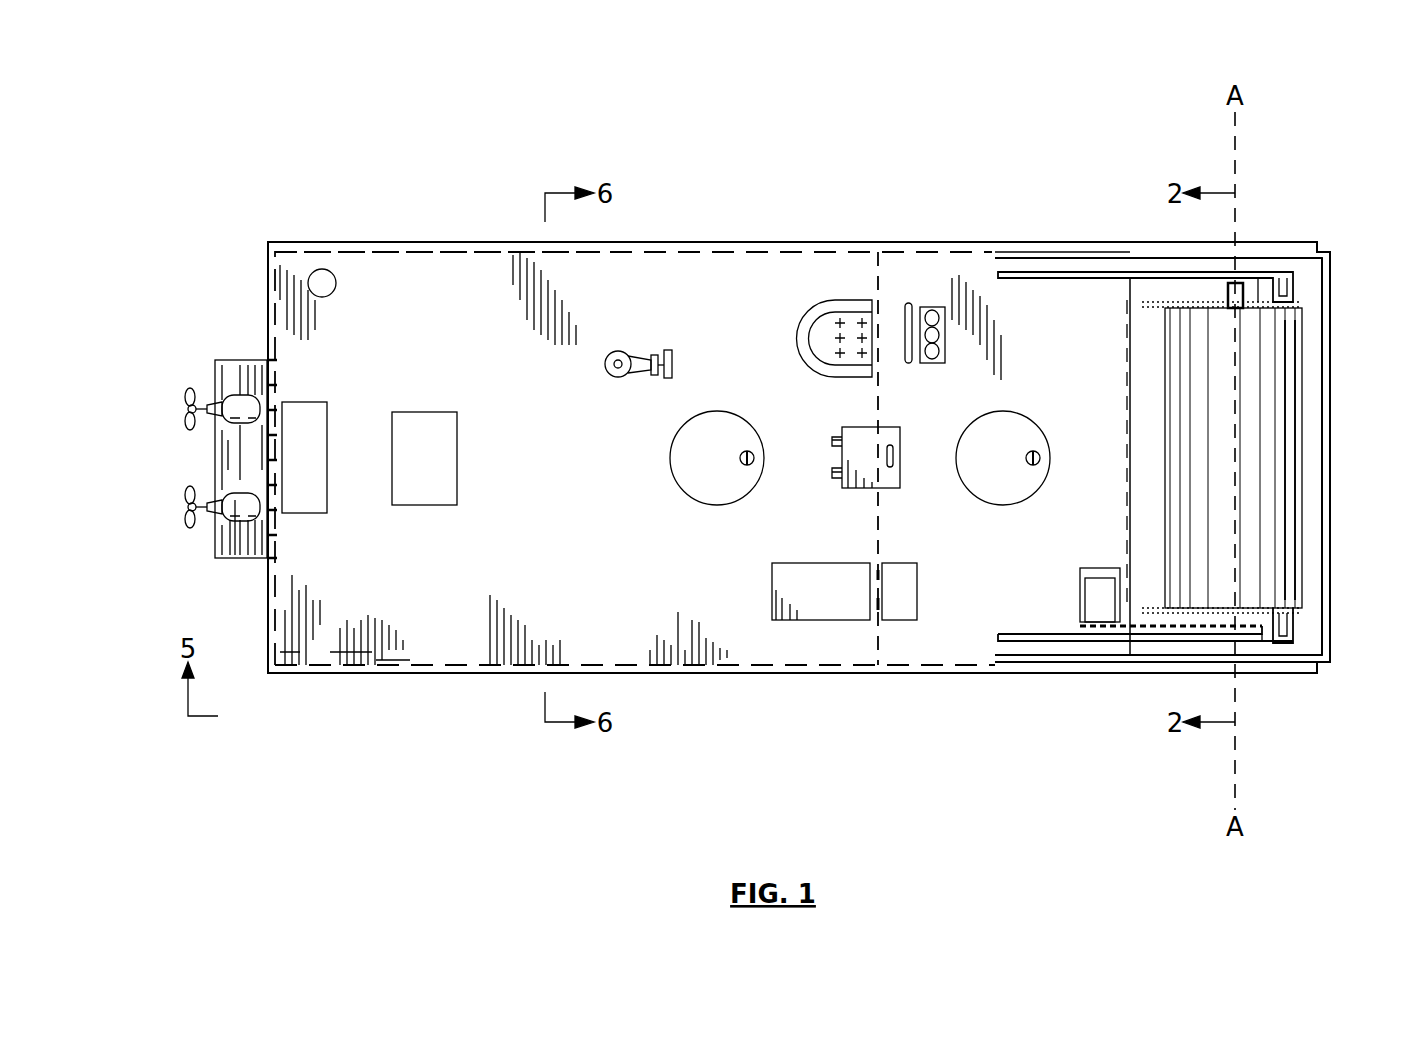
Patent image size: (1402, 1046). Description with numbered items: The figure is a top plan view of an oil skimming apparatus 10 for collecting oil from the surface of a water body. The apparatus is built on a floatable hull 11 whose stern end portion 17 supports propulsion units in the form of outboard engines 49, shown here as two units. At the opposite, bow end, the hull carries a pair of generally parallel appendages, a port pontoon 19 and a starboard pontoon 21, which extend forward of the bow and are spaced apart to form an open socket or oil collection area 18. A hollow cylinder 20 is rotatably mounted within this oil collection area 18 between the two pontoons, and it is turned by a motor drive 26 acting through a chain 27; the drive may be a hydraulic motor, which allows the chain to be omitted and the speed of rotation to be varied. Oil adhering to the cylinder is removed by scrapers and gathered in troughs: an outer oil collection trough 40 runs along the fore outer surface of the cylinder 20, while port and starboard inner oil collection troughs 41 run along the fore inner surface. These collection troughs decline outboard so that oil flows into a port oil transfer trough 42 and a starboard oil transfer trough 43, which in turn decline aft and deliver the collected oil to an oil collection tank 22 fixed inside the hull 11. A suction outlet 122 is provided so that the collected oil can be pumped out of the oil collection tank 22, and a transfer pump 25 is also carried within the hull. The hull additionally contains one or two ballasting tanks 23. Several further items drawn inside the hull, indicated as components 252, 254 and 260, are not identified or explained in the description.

The oil skimming apparatus 10 is at (448, 105).
The floatable hull 11 is at (448, 247).
The stern end portion 17 is at (322, 242).
The suction outlet 122 is at (325, 282).
The port oil transfer trough 42 is at (1062, 216).
The port pontoon 19 is at (1264, 275).
The inner oil collection trough 41 is at (1265, 285).
The oil collection area 18 is at (1265, 360).
The outer oil collection trough 40 is at (1312, 413).
The hollow cylinder 20 is at (1268, 555).
The chain 27 is at (1135, 628).
The motor drive 26 is at (1060, 642).
The starboard oil transfer trough 43 is at (1013, 652).
The starboard pontoon 21 is at (1160, 673).
The ballasting tank 23 is at (740, 293).
The oil collection tank 22 is at (417, 615).
The outboard engine 49 is at (213, 410).
The battery 254 is at (305, 425).
The controller 252 is at (430, 425).
The transfer pump 25 is at (620, 352).
The tank 260 is at (706, 425).